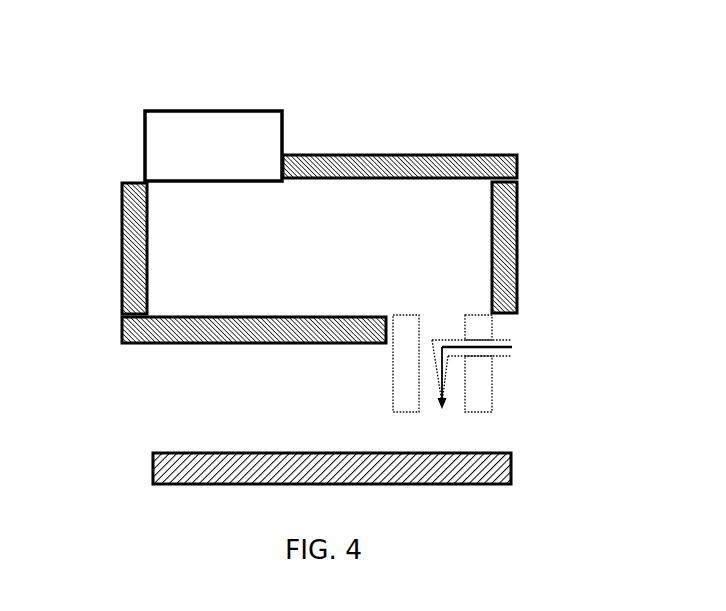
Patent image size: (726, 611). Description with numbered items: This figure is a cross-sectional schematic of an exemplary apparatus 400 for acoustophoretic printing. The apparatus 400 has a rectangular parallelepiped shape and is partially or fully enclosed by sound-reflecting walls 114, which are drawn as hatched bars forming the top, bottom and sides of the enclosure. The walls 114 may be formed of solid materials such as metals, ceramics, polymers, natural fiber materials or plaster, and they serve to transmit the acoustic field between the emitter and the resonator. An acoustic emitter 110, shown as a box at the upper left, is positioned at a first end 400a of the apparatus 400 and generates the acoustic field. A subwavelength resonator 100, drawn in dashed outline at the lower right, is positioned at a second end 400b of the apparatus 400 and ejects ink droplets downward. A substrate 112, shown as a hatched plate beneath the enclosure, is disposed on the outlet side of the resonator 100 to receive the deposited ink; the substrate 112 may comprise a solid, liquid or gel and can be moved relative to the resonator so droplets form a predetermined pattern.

The subwavelength resonator 100 is at (428, 300).
The acoustic emitter 110 is at (217, 181).
The substrate 112 is at (267, 453).
The sound-reflecting walls 114 is at (121, 252).
The apparatus 400 is at (321, 244).
The first end 400a is at (113, 156).
The second end 400b is at (533, 360).